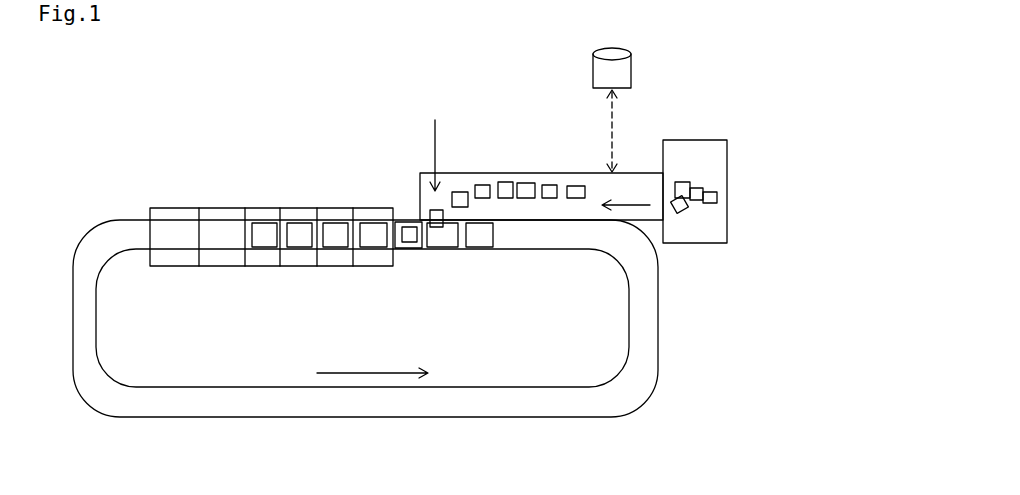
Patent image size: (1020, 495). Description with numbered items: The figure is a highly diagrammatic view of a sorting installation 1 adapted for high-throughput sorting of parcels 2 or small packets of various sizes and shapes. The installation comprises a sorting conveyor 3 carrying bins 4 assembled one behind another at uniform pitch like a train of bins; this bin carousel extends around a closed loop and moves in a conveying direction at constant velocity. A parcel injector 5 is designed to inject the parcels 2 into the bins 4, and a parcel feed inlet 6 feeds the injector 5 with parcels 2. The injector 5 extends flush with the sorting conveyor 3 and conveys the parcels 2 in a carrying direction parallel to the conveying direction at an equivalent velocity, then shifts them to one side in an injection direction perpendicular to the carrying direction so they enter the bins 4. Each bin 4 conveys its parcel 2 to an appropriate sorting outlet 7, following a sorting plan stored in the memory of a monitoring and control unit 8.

The sorting installation 1 is at (179, 176).
The parcel 2 is at (408, 250).
The sorting conveyor 3 is at (176, 402).
The bin 4 is at (260, 231).
The parcel injector 5 is at (487, 172).
The parcel feed inlet 6 is at (727, 143).
The sorting outlet 7 is at (175, 268).
The monitoring and control unit 8 is at (621, 73).